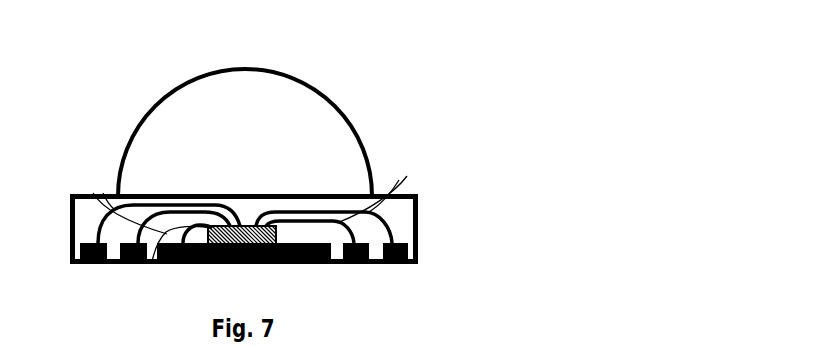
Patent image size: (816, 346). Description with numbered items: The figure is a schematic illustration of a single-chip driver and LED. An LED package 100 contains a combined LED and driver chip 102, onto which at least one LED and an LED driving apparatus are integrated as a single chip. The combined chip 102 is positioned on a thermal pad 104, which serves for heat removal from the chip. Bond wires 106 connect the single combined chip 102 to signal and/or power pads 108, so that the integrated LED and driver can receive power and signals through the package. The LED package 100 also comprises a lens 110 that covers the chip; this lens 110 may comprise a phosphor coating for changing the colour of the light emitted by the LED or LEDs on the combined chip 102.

The LED package 100 is at (419, 226).
The combined LED and driver chip 102 is at (248, 226).
The thermal pad 104 is at (239, 263).
The bond wires 106 is at (103, 193).
The signal and/or power pads 108 is at (83, 263).
The lens 110 is at (342, 112).